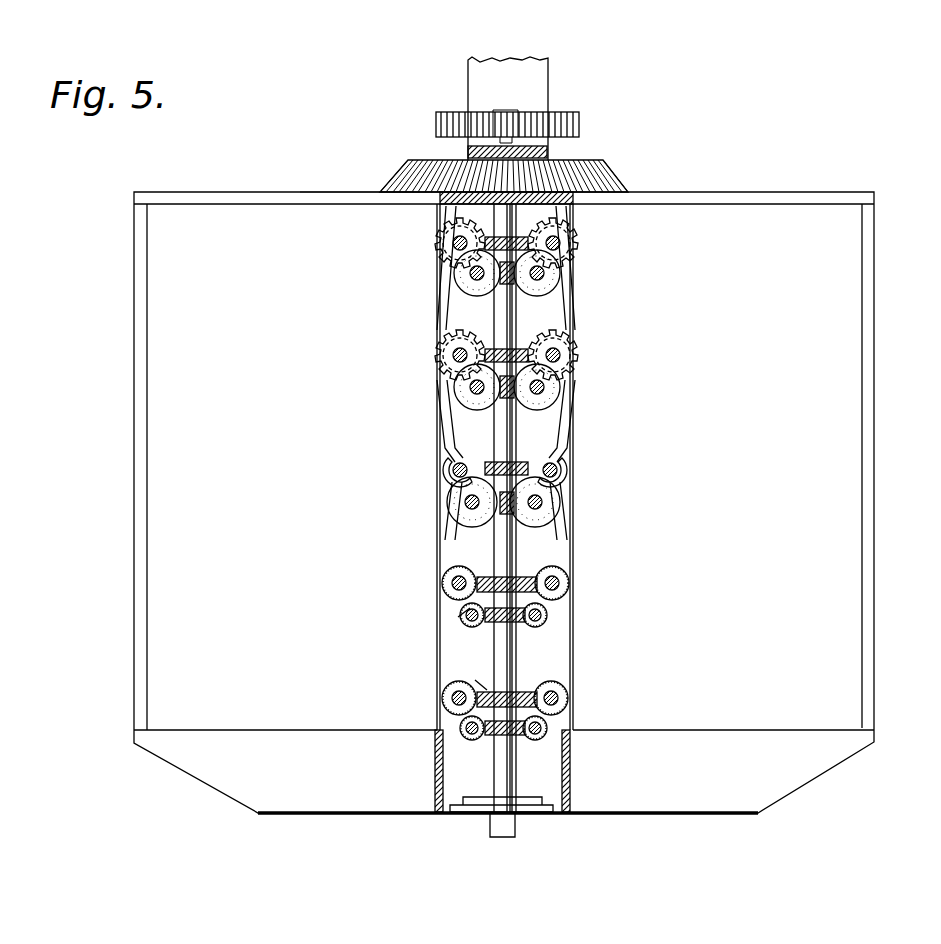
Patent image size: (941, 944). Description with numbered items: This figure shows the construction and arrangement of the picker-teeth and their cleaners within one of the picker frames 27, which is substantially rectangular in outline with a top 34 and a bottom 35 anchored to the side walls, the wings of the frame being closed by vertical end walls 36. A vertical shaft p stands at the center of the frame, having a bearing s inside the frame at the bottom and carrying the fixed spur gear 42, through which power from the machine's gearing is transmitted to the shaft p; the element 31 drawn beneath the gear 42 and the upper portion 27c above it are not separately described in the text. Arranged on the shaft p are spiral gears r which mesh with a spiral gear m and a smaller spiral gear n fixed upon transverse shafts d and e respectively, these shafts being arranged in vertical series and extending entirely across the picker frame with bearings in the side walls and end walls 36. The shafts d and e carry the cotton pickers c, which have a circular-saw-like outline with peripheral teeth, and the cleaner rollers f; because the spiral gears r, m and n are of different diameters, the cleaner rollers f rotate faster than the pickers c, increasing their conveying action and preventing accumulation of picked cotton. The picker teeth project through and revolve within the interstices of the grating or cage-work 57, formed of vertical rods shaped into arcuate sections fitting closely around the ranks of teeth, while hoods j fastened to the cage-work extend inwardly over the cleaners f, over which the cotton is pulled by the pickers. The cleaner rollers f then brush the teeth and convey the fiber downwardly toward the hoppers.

The drive shaft 27c is at (555, 82).
The spur gear 42 is at (580, 125).
The bevel gear 31 is at (615, 180).
The top 34 is at (263, 182).
The picker frame 27 is at (114, 378).
The vertical end wall 36 is at (135, 600).
The bottom 35 is at (703, 818).
The cotton picker c is at (572, 242).
The transverse shaft d is at (560, 255).
The transverse shaft e is at (548, 280).
The grating or cage-work 57 is at (455, 427).
The vertical shaft p is at (494, 321).
The cleaner roller f is at (550, 398).
The hood j is at (440, 472).
The spiral gear m is at (560, 556).
The smaller spiral gear n is at (565, 636).
The spiral gear r is at (487, 690).
The bearing s is at (488, 795).